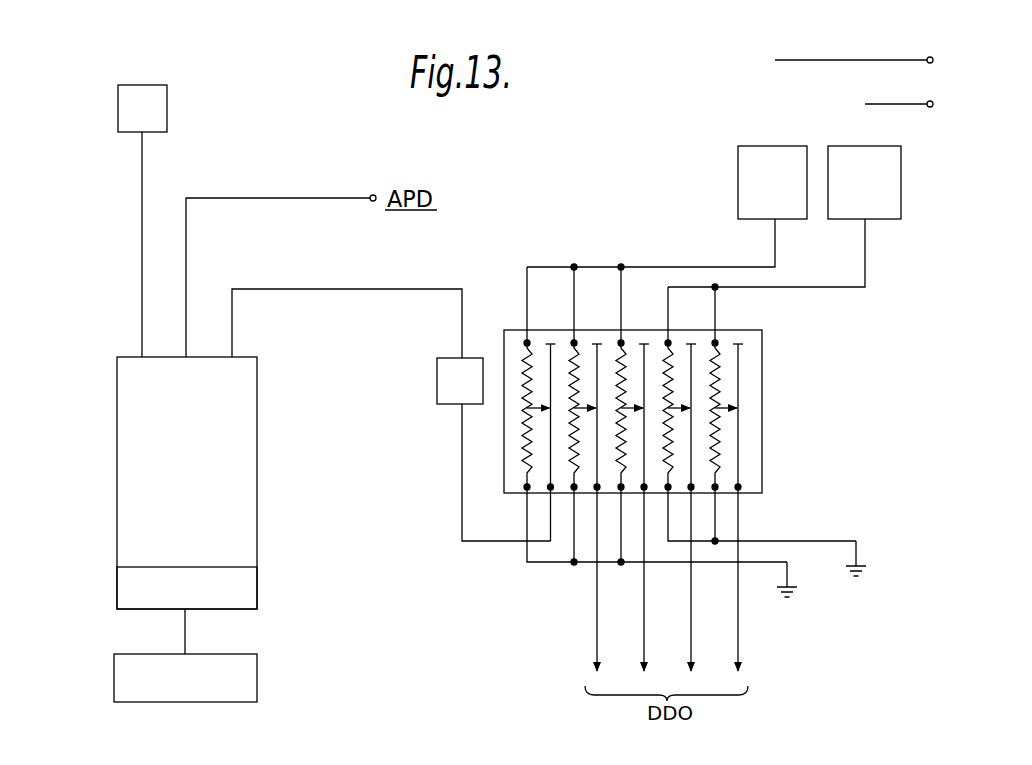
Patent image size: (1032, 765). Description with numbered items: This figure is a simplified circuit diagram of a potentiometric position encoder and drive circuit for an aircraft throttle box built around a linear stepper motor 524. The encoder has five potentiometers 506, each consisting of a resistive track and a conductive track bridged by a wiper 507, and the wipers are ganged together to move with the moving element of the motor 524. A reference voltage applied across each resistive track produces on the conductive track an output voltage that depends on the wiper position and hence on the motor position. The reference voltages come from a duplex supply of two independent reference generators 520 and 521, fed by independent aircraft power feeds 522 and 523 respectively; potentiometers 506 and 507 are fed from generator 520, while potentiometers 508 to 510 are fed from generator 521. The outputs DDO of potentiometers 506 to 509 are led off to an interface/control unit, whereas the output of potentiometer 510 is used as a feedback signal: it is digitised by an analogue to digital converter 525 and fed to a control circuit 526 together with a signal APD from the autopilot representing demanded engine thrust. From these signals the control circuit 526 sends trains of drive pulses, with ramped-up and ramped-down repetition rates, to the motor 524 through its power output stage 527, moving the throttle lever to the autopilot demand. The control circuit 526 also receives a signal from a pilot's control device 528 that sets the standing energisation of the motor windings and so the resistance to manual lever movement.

The potentiometer 506 is at (737, 321).
The wiper 507 is at (683, 320).
The potentiometer 508 is at (637, 321).
The potentiometer 509 is at (589, 321).
The potentiometer 510 is at (541, 320).
The reference generator 520 is at (901, 186).
The reference generator 521 is at (738, 160).
The power feed 522 is at (933, 103).
The power feed 523 is at (933, 59).
The linear stepper motor 524 is at (257, 683).
The analogue to digital converter 525 is at (437, 393).
The control circuit 526 is at (259, 392).
The power output stage 527 is at (260, 590).
The pilot's control device 528 is at (167, 110).